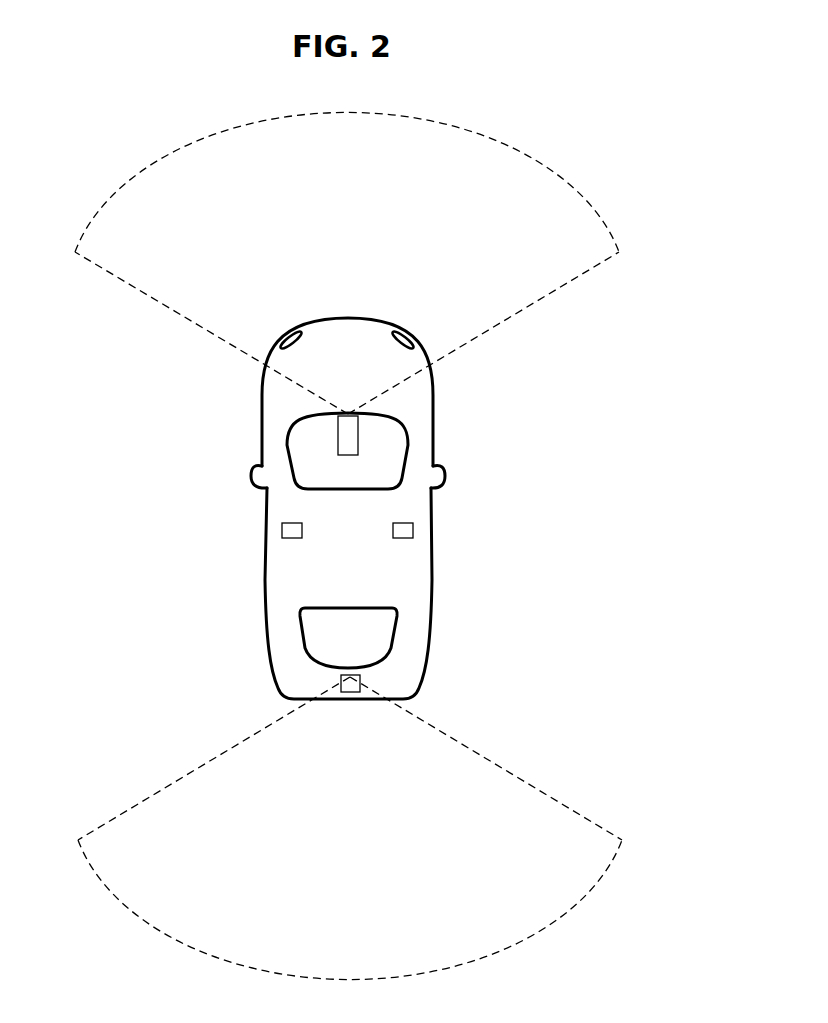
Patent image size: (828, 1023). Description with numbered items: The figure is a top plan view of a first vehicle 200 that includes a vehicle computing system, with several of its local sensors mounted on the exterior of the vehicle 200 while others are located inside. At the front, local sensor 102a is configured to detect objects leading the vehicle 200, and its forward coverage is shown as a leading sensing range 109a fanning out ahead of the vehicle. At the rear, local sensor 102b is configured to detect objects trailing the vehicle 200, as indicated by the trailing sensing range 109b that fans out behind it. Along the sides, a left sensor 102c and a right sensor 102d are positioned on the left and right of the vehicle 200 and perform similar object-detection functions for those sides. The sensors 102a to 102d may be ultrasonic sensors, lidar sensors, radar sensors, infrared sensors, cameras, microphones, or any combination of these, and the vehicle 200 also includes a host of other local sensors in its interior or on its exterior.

The first vehicle 200 is at (612, 509).
The local sensor 102a is at (348, 438).
The local sensor 102b is at (350, 684).
The left sensor 102c is at (293, 527).
The right sensor 102d is at (403, 527).
The leading sensing range 109a is at (512, 317).
The trailing sensing range 109b is at (602, 822).